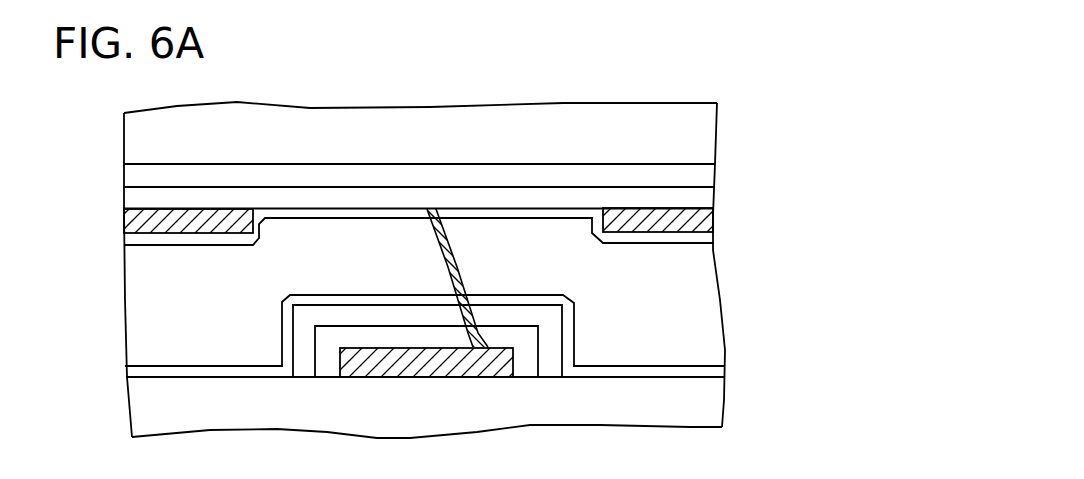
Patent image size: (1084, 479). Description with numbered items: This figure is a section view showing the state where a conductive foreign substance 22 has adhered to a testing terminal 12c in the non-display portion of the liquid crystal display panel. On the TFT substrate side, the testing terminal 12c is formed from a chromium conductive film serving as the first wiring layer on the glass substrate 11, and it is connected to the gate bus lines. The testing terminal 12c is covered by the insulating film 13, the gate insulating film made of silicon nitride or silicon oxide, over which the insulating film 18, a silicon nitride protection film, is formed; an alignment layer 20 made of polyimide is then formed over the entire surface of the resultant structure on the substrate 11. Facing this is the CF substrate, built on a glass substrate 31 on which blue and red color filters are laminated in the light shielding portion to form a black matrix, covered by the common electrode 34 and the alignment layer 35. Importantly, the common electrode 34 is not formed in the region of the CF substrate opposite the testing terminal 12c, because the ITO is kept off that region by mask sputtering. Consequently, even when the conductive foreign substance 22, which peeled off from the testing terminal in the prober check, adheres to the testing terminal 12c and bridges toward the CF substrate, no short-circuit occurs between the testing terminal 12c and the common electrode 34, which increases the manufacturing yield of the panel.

The glass substrate 31 is at (710, 108).
The common electrode 34 is at (192, 227).
The alignment layer 35 is at (315, 217).
The conductive foreign substance 22 is at (450, 243).
The alignment layer 20 is at (640, 365).
The insulating film (protection film) 18 is at (397, 315).
The insulating film (gate insulating film) 13 is at (490, 338).
The testing terminal 12c is at (448, 372).
The glass substrate 11 is at (718, 403).